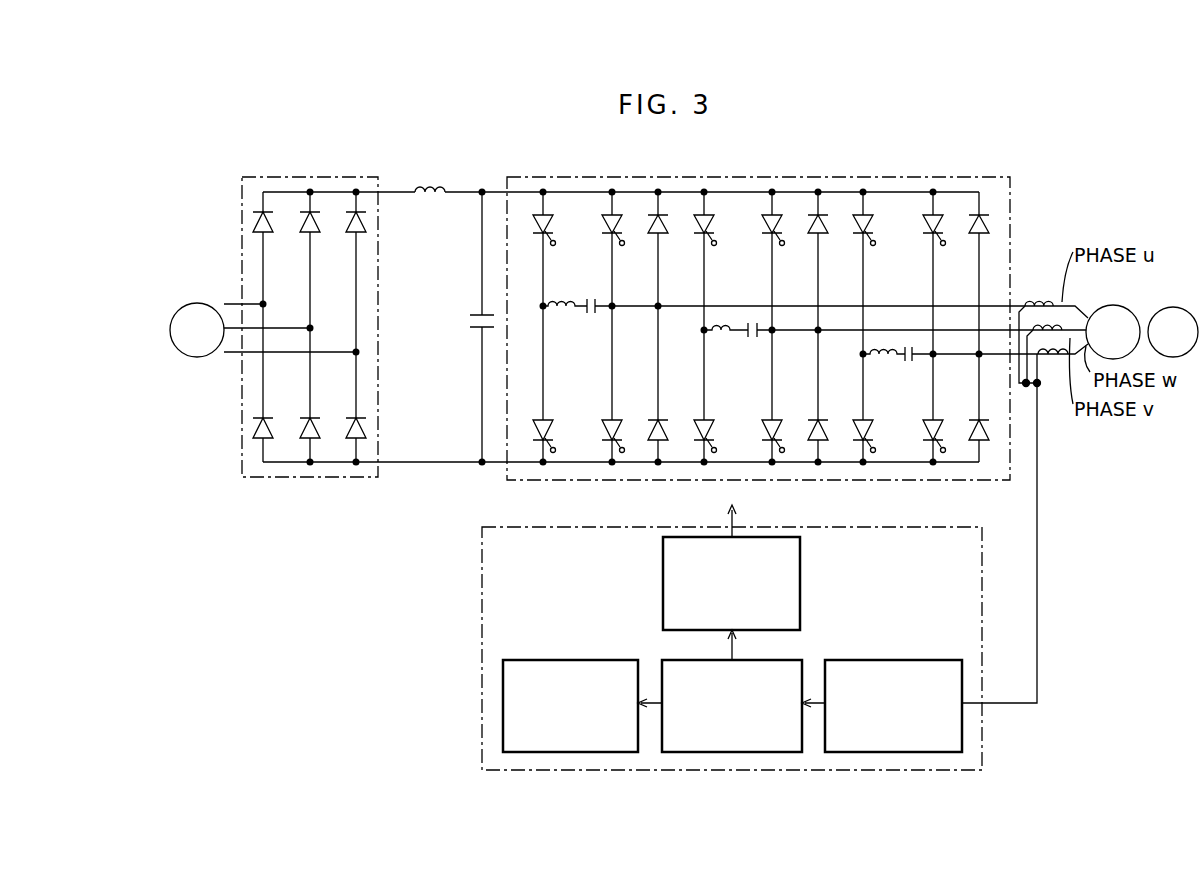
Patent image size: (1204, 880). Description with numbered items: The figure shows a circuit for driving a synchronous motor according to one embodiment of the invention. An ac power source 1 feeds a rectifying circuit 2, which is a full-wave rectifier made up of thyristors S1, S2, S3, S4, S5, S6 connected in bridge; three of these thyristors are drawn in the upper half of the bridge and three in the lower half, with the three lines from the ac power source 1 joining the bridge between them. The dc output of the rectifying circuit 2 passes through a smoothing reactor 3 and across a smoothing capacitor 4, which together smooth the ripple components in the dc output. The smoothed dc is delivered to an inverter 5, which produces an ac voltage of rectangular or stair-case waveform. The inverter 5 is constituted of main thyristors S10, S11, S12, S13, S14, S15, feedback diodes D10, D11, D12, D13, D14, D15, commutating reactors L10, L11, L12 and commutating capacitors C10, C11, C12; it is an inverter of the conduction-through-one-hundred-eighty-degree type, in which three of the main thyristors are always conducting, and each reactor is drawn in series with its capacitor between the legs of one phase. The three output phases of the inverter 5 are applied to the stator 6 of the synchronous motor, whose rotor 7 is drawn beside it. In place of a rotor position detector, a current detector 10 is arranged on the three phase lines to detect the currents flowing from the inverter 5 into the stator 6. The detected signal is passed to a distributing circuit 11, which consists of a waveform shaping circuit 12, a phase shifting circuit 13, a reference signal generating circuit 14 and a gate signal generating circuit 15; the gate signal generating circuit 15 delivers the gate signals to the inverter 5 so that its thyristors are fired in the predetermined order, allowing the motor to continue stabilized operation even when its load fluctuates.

The ac power source 1 is at (208, 302).
The rectifying circuit 2 is at (323, 309).
The smoothing reactor 3 is at (430, 186).
The smoothing capacitor 4 is at (470, 322).
The inverter 5 is at (930, 178).
The stator of synchronous motor 6 is at (1113, 305).
The rotor of synchronous motor 7 is at (1164, 309).
The current detector 10 is at (1042, 300).
The distributing circuit 11 is at (482, 584).
The waveform shaping circuit 12 is at (886, 660).
The phase shifting circuit 13 is at (800, 660).
The reference signal generating circuit 14 is at (583, 660).
The gate signal generating circuit 15 is at (802, 584).
The thyristor S1 is at (266, 227).
The thyristor S2 is at (315, 228).
The thyristor S3 is at (362, 230).
The thyristor S4 is at (272, 424).
The thyristor S5 is at (318, 424).
The thyristor S6 is at (362, 426).
The main thyristor S10 is at (552, 237).
The main thyristor S11 is at (702, 236).
The main thyristor S12 is at (860, 236).
The main thyristor S13 is at (536, 428).
The main thyristor S14 is at (698, 428).
The main thyristor S15 is at (858, 428).
The feedback diode D10 is at (656, 236).
The feedback diode D11 is at (816, 236).
The feedback diode D12 is at (976, 236).
The feedback diode D13 is at (652, 428).
The feedback diode D14 is at (812, 428).
The feedback diode D15 is at (974, 428).
The commutating reactor L10 is at (562, 312).
The commutating reactor L11 is at (712, 336).
The commutating reactor L12 is at (878, 344).
The commutating capacitor C10 is at (592, 312).
The commutating capacitor C11 is at (752, 338).
The commutating capacitor C12 is at (910, 362).